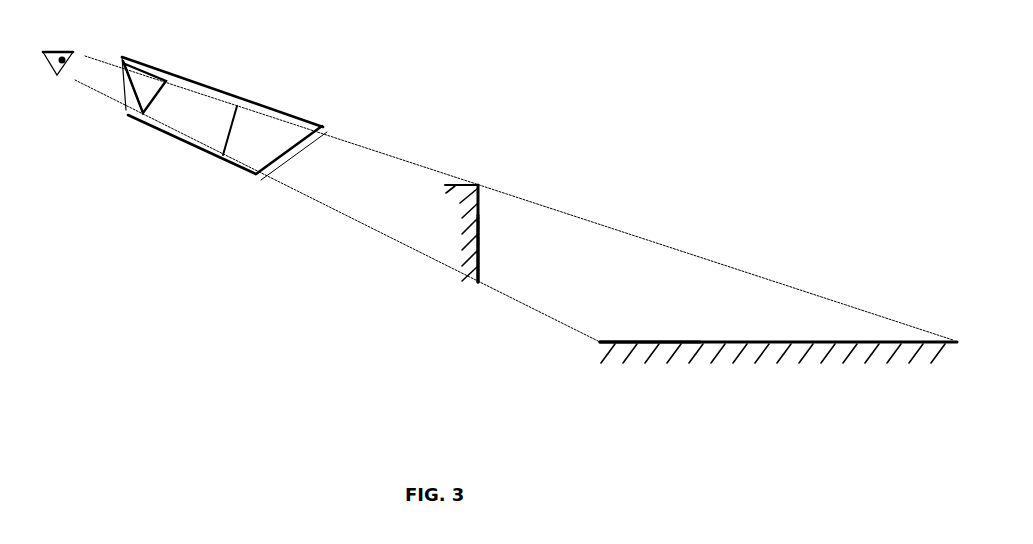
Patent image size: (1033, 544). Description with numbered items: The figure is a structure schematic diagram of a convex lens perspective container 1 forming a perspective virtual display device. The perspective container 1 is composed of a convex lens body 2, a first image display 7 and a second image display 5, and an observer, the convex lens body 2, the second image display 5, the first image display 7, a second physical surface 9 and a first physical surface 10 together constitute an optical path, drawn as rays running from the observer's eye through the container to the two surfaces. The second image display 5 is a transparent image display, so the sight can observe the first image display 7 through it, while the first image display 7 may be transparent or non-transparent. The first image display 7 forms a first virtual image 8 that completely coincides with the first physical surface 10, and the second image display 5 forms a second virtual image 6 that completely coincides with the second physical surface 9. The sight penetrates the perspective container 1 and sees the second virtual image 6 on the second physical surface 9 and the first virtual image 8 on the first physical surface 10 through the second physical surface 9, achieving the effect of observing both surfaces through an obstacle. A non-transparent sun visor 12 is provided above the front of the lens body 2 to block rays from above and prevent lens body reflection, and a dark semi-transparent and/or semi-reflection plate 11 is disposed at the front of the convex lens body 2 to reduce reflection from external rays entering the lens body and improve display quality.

The perspective container 1 is at (258, 174).
The convex lens body 2 is at (180, 77).
The second image display 5 is at (240, 110).
The second virtual image 6 is at (480, 218).
The first image display 7 is at (290, 145).
The first virtual image 8 is at (690, 342).
The second physical surface 9 is at (477, 218).
The first physical surface 10 is at (603, 345).
The dark semi-transparent and/or semi-reflection plate 11 is at (127, 87).
The non-transparent sun visor 12 is at (170, 73).